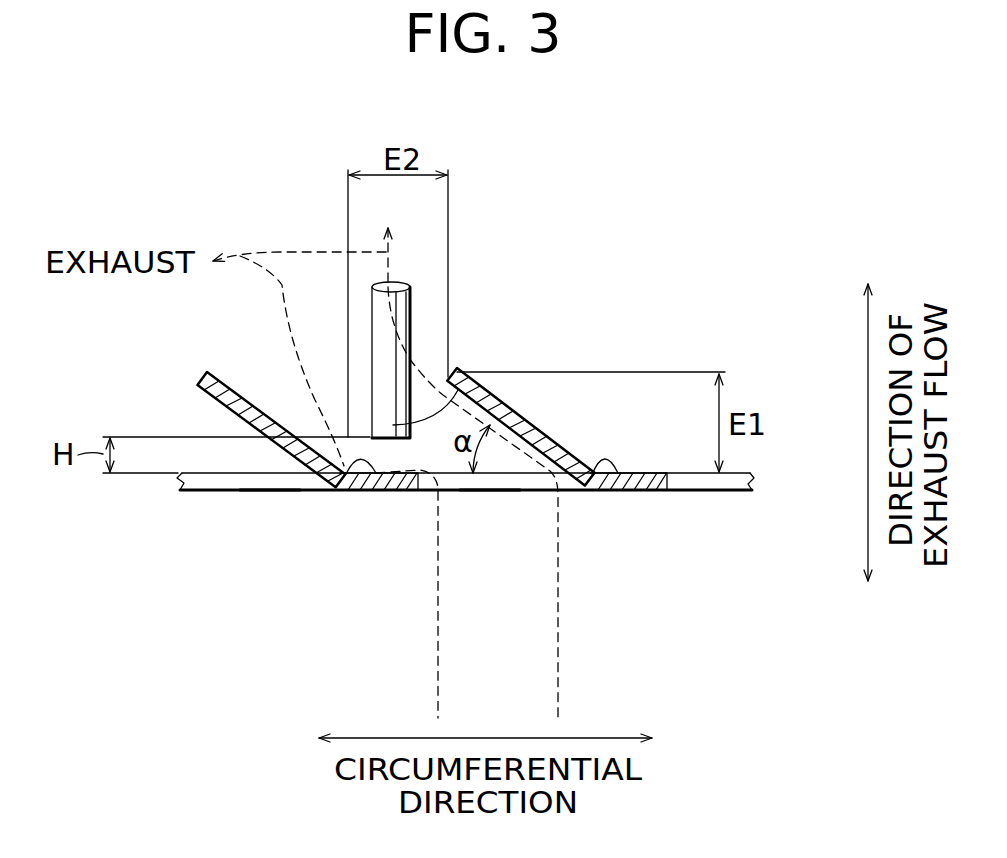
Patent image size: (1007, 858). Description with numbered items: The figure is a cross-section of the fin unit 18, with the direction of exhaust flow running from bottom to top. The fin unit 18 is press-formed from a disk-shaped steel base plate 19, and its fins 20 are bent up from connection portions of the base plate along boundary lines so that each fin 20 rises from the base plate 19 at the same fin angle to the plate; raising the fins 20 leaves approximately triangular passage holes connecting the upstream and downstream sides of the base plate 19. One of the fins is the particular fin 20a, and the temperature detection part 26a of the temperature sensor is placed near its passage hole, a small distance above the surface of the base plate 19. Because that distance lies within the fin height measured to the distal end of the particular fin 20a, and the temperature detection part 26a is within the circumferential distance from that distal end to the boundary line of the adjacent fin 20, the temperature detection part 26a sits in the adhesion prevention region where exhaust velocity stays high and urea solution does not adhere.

The fin unit 18 is at (517, 506).
The base plate 19 is at (703, 497).
The fin 20 is at (226, 385).
The particular fin 20a is at (485, 381).
The temperature detection part 26a is at (468, 377).